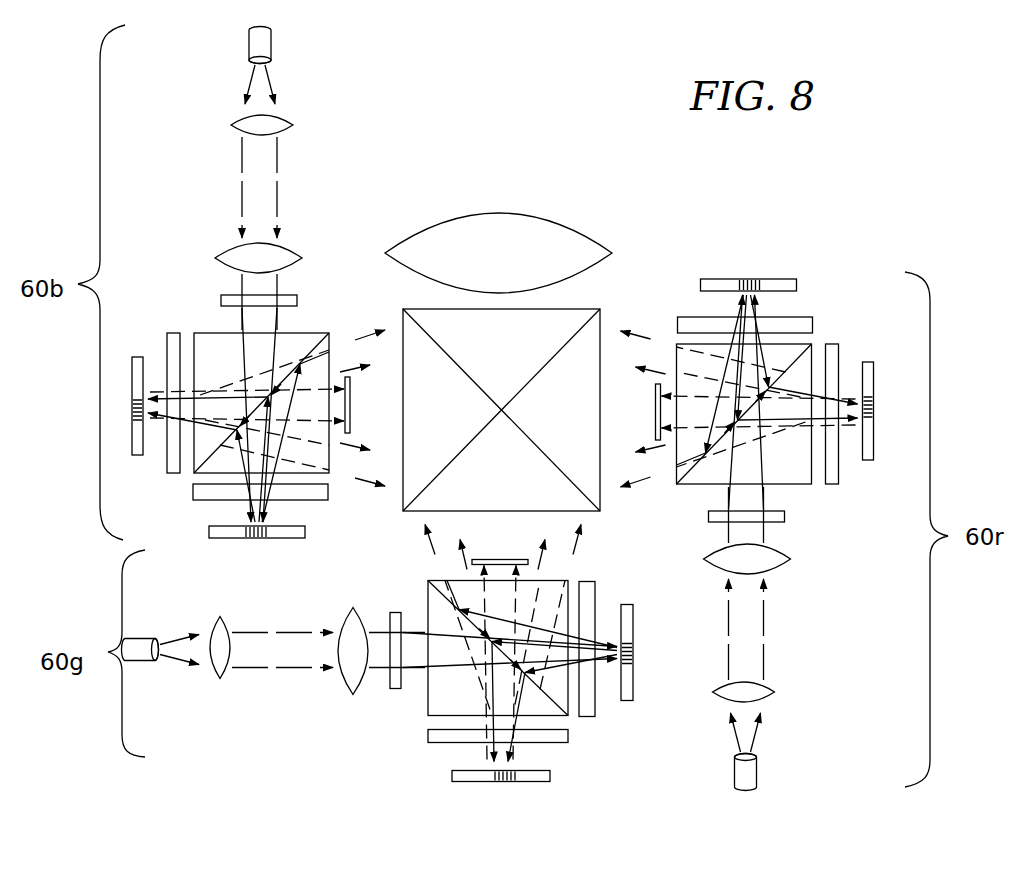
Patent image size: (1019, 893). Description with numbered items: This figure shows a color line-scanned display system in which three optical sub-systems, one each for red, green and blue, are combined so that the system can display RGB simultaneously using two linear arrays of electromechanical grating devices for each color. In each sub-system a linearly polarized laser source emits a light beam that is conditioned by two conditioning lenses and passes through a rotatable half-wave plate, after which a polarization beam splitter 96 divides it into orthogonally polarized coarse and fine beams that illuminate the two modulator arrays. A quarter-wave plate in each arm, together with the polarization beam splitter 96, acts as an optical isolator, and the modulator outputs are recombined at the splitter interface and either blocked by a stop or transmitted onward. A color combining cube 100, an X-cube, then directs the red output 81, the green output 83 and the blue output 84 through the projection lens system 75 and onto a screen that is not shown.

The projection lens system 75 is at (513, 213).
The red output 81 is at (676, 486).
The green output 83 is at (430, 579).
The blue output 84 is at (334, 348).
The polarization beam splitter 96 is at (210, 333).
The color combining cube 100 is at (582, 309).